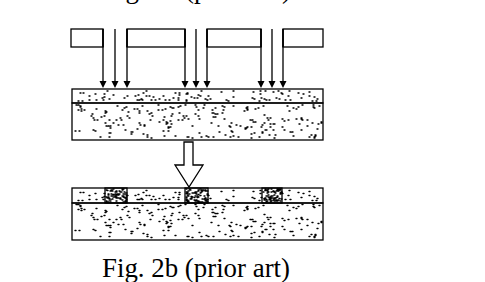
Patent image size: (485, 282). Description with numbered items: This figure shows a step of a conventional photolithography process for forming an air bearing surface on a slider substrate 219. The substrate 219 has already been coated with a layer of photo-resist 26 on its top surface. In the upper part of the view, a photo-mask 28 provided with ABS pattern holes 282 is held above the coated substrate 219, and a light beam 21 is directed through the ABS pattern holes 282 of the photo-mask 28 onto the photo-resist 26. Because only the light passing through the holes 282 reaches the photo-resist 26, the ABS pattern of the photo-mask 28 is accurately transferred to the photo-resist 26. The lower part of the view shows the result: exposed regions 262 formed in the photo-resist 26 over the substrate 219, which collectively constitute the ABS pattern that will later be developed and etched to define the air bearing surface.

The photo-mask 28 is at (317, 33).
The ABS pattern holes 282 is at (277, 33).
The light beam 21 is at (287, 61).
The photo-resist 26 is at (316, 97).
The substrate 219 is at (300, 117).
The exposed regions 262 is at (278, 187).